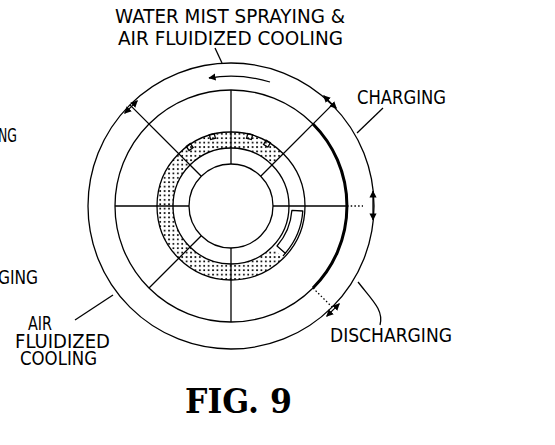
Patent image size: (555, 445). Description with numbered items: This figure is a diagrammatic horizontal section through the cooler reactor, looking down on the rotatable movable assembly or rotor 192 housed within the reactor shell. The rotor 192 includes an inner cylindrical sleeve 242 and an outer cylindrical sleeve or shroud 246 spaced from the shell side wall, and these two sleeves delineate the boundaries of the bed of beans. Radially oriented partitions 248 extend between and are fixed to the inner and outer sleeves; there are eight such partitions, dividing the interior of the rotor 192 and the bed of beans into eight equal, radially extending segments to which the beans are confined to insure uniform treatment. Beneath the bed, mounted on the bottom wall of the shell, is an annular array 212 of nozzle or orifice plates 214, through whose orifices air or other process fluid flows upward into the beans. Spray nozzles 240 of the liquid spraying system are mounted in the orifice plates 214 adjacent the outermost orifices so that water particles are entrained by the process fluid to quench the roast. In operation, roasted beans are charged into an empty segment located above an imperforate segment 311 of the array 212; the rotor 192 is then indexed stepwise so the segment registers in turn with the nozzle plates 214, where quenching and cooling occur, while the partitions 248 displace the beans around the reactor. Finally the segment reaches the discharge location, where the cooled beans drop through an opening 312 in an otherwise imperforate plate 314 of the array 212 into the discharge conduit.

The rotor 192 is at (349, 179).
The annular array of nozzle plates 212 is at (213, 128).
The nozzle plate 214 is at (324, 96).
The spray nozzle 240 is at (268, 141).
The inner cylindrical sleeve 242 is at (212, 280).
The outer cylindrical sleeve or shroud 246 is at (348, 227).
The radially oriented partition 248 is at (124, 208).
The imperforate segment 311 is at (304, 171).
The opening 312 is at (294, 244).
The imperforate plate 314 is at (288, 253).